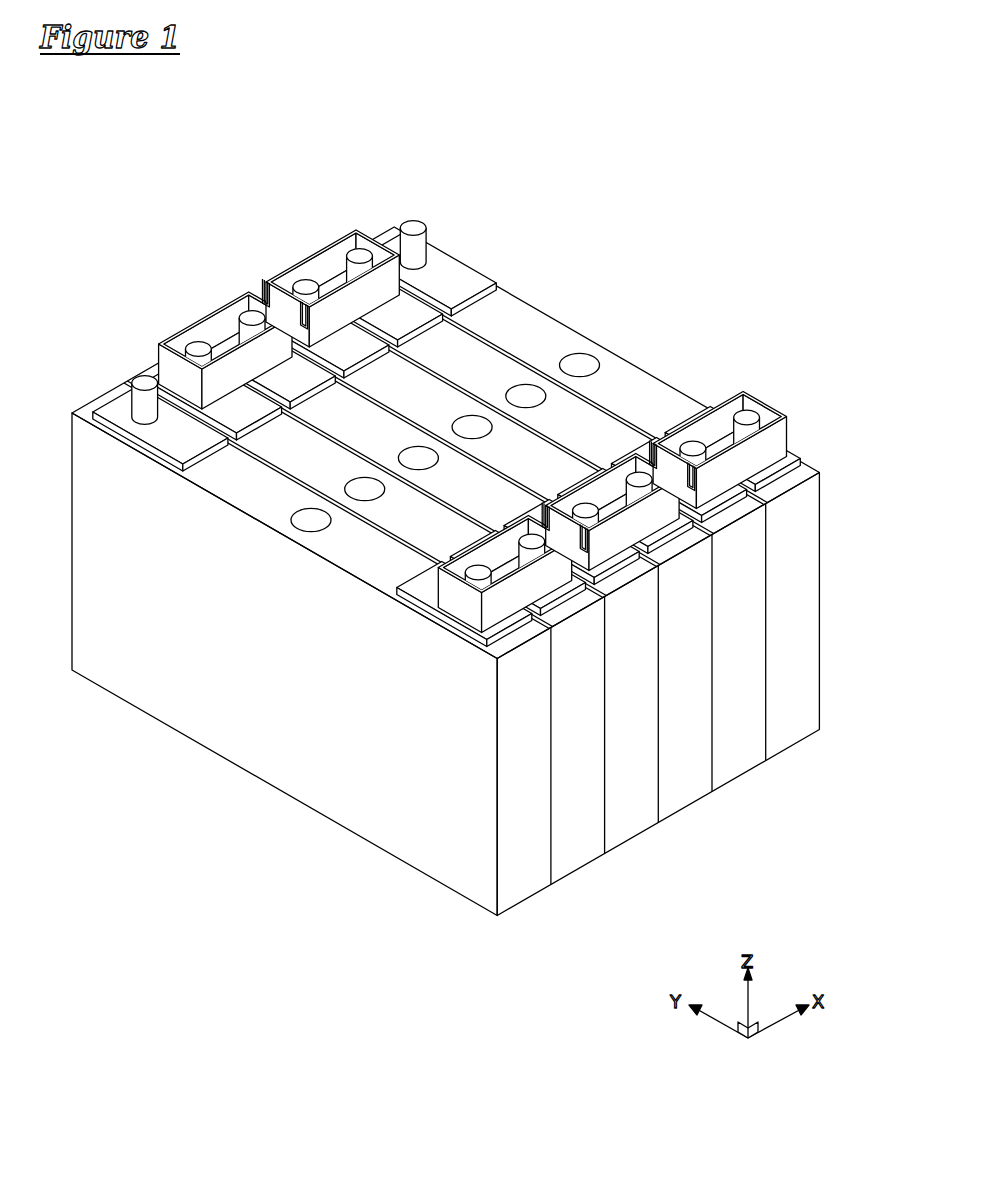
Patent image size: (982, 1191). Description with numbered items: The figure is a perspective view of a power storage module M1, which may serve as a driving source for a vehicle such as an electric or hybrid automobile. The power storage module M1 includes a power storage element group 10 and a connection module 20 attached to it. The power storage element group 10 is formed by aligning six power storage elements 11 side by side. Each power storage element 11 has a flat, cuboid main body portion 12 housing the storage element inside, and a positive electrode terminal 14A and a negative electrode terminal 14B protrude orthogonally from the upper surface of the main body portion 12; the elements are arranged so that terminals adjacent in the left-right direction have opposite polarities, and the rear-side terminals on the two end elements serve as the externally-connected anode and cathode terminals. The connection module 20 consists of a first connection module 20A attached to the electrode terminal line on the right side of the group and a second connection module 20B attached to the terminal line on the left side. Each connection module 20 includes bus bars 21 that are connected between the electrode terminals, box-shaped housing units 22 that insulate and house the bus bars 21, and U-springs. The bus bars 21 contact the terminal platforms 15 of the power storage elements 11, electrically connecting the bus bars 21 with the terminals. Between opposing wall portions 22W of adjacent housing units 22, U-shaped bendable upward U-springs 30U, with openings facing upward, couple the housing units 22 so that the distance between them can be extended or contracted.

The power storage element group 10 is at (828, 805).
The power storage element 11 is at (533, 882).
The main body portion 12 is at (287, 770).
The positive electrode terminal 14A is at (253, 316).
The negative electrode terminal 14B is at (416, 217).
The terminal platform 15 is at (457, 278).
The connection module 20 is at (545, 311).
The first connection module 20A is at (752, 384).
The second connection module 20B is at (375, 214).
The bus bar 21 is at (227, 347).
The housing unit 22 is at (484, 373).
The wall portion 22W is at (633, 462).
The upward U-spring 30U is at (303, 312).
The power storage module M1 is at (360, 954).